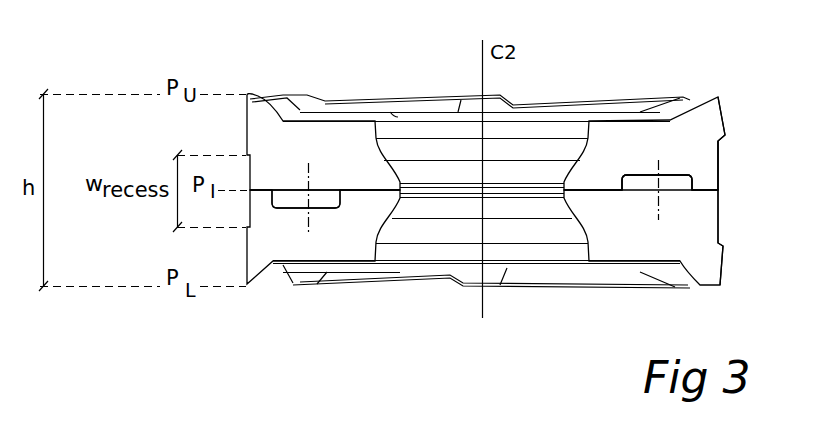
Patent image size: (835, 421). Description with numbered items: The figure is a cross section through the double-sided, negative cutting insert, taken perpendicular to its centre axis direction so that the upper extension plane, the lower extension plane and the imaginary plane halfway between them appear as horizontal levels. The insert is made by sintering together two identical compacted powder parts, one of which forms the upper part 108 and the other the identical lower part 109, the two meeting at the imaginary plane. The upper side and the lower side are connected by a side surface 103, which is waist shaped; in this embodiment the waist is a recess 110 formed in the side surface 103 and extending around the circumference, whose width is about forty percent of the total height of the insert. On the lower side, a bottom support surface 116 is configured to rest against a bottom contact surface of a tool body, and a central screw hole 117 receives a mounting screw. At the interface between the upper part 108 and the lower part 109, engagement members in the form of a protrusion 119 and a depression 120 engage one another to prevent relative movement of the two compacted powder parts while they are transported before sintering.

The side surface 103 is at (727, 120).
The upper part 108 is at (703, 120).
The lower part 109 is at (678, 243).
The recess 110 is at (719, 166).
The bottom support surface 116 is at (525, 268).
The screw hole 117 is at (427, 132).
The protrusion 119 is at (308, 195).
The depression 120 is at (313, 192).